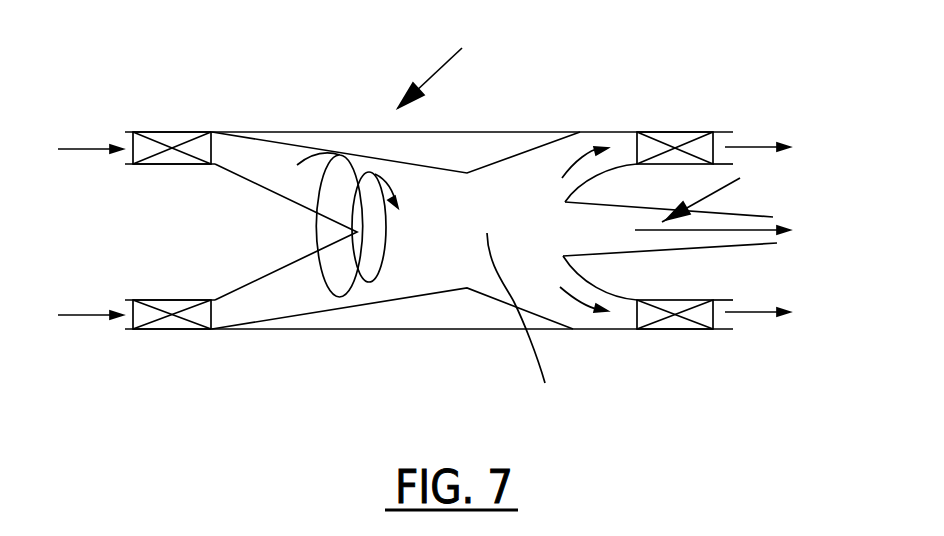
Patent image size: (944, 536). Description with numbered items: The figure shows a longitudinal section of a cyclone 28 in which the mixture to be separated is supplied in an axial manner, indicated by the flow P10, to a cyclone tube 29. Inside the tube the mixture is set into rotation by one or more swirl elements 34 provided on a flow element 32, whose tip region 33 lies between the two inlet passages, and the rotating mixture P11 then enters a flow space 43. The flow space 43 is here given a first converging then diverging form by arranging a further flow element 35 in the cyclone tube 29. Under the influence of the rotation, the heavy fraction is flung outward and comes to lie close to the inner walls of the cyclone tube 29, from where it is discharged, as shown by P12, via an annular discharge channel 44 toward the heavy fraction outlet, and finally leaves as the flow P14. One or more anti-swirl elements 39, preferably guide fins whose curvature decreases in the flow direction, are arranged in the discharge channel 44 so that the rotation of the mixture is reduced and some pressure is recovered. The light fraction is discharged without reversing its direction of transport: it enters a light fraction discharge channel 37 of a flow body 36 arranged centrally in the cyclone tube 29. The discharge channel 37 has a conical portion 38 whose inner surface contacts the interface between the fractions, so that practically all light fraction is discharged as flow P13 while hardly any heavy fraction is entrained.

The cyclone 28 is at (446, 67).
The cyclone tube 29 is at (498, 132).
The flow element 32 is at (173, 243).
The partition cusp 33 is at (306, 242).
The swirl element 34 is at (168, 138).
The further flow element 35 is at (460, 150).
The flow body 36 is at (725, 198).
The light fraction discharge channel 37 is at (714, 189).
The conical portion 38 is at (583, 237).
The anti-swirl element 39 is at (675, 137).
The flow space 43 is at (523, 326).
The annular discharge channel 44 is at (732, 323).
The axial supply flow P10 is at (89, 219).
The rotating mixture flow P11 is at (367, 225).
The heavy fraction discharge flow P12 is at (562, 229).
The light fraction discharge flow P13 is at (729, 242).
The outer outlet flow P14 is at (774, 230).